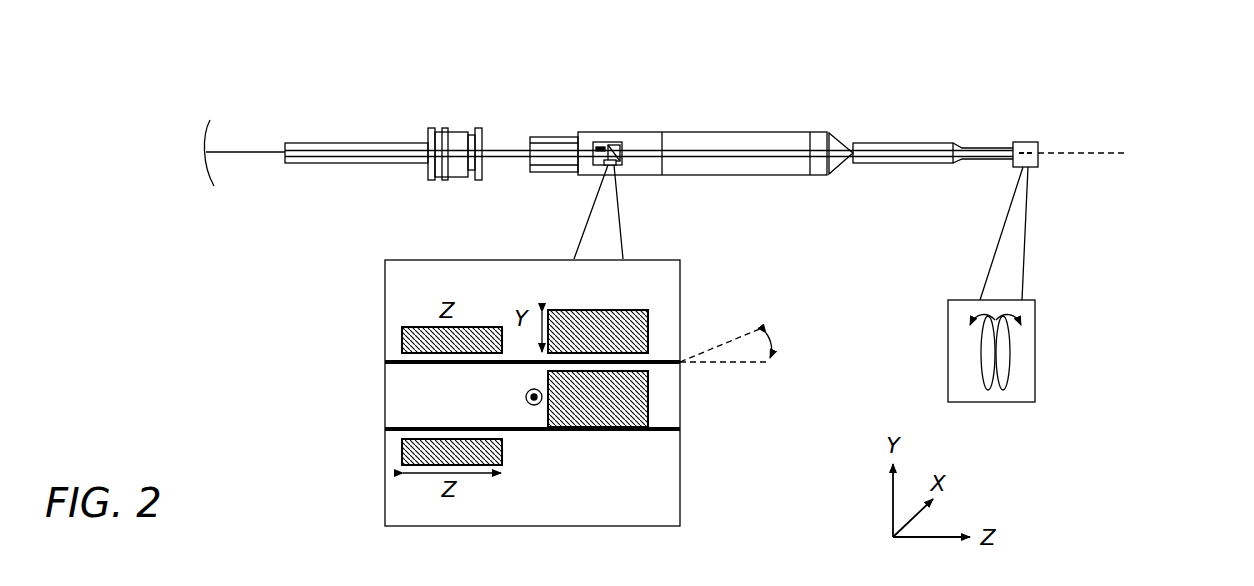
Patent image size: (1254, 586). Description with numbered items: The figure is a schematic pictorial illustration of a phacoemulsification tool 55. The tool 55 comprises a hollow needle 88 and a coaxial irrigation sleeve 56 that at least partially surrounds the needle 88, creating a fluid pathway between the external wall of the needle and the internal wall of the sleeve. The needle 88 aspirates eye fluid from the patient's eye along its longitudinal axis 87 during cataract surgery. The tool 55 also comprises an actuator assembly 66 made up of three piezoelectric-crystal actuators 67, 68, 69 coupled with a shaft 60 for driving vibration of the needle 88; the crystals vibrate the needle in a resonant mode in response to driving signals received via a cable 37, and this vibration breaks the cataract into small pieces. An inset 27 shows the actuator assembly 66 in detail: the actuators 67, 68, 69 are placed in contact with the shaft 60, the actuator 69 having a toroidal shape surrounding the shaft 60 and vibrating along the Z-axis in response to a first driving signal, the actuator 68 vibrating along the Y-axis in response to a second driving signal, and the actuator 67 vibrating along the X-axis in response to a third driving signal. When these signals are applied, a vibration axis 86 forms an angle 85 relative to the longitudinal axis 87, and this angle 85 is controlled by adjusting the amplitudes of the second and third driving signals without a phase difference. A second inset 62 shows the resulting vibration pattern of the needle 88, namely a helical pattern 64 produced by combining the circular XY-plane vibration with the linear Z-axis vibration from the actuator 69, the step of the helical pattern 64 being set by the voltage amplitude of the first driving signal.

The tool 55 is at (1160, 65).
The cable 37 is at (245, 151).
The shaft 60 is at (656, 133).
The actuator assembly 66 is at (588, 116).
The coaxial irrigation sleeve 56 is at (893, 143).
The needle 88 is at (999, 148).
The longitudinal axis 87 is at (1098, 168).
The vibration axis 86 is at (769, 325).
The angle 85 is at (774, 341).
The inset 27 is at (398, 259).
The actuator 68 is at (648, 325).
The actuator 67 is at (612, 428).
The actuator 69 is at (402, 340).
The inset 62 is at (1036, 345).
The helical pattern 64 is at (1026, 371).